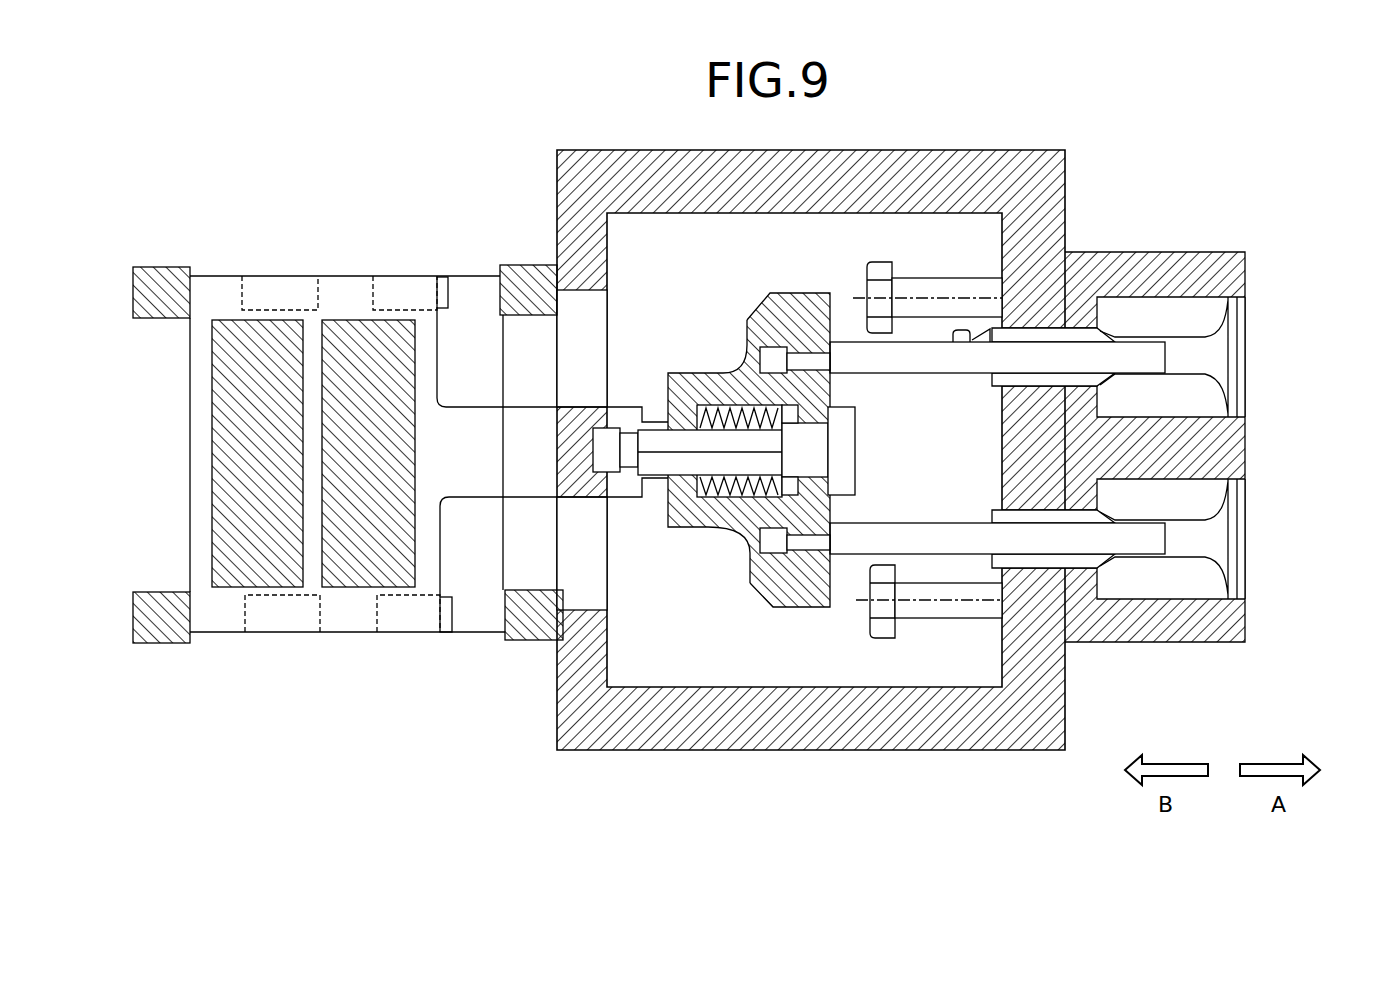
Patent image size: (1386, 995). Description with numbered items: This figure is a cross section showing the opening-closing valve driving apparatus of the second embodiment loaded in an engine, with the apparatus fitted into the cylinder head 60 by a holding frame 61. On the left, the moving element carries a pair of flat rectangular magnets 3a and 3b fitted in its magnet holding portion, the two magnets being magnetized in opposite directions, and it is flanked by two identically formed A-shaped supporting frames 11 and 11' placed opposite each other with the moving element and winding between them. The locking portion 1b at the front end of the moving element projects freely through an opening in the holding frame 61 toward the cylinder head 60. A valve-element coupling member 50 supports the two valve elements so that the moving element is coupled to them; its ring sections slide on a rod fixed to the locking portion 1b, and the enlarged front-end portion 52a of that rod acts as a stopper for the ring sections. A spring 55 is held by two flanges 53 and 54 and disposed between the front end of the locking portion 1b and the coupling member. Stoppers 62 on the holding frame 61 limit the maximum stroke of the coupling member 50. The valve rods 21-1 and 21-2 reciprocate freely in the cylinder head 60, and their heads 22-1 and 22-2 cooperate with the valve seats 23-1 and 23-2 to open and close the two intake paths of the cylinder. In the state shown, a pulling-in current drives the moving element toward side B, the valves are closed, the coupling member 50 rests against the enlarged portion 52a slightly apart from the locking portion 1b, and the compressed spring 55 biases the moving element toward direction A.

The supporting frame 11' is at (345, 247).
The supporting frame 11 is at (348, 678).
The magnet 3a is at (224, 588).
The magnet 3b is at (357, 588).
The locking portion 1b is at (470, 483).
The valve-element coupling member 50 is at (755, 294).
The flange 53 is at (688, 372).
The flange 54 is at (765, 600).
The spring 55 is at (709, 528).
The front-end portion of the rod 52a is at (852, 428).
The stopper 62 is at (880, 268).
The cylinder head 60 is at (1152, 252).
The holding frame 61 is at (823, 751).
The valve rod 21-1 is at (1125, 347).
The valve rod 21-2 is at (1127, 528).
The head 22-1 is at (1233, 323).
The head 22-2 is at (1236, 540).
The valve seat 23-1 is at (1246, 403).
The valve seat 23-2 is at (1248, 598).